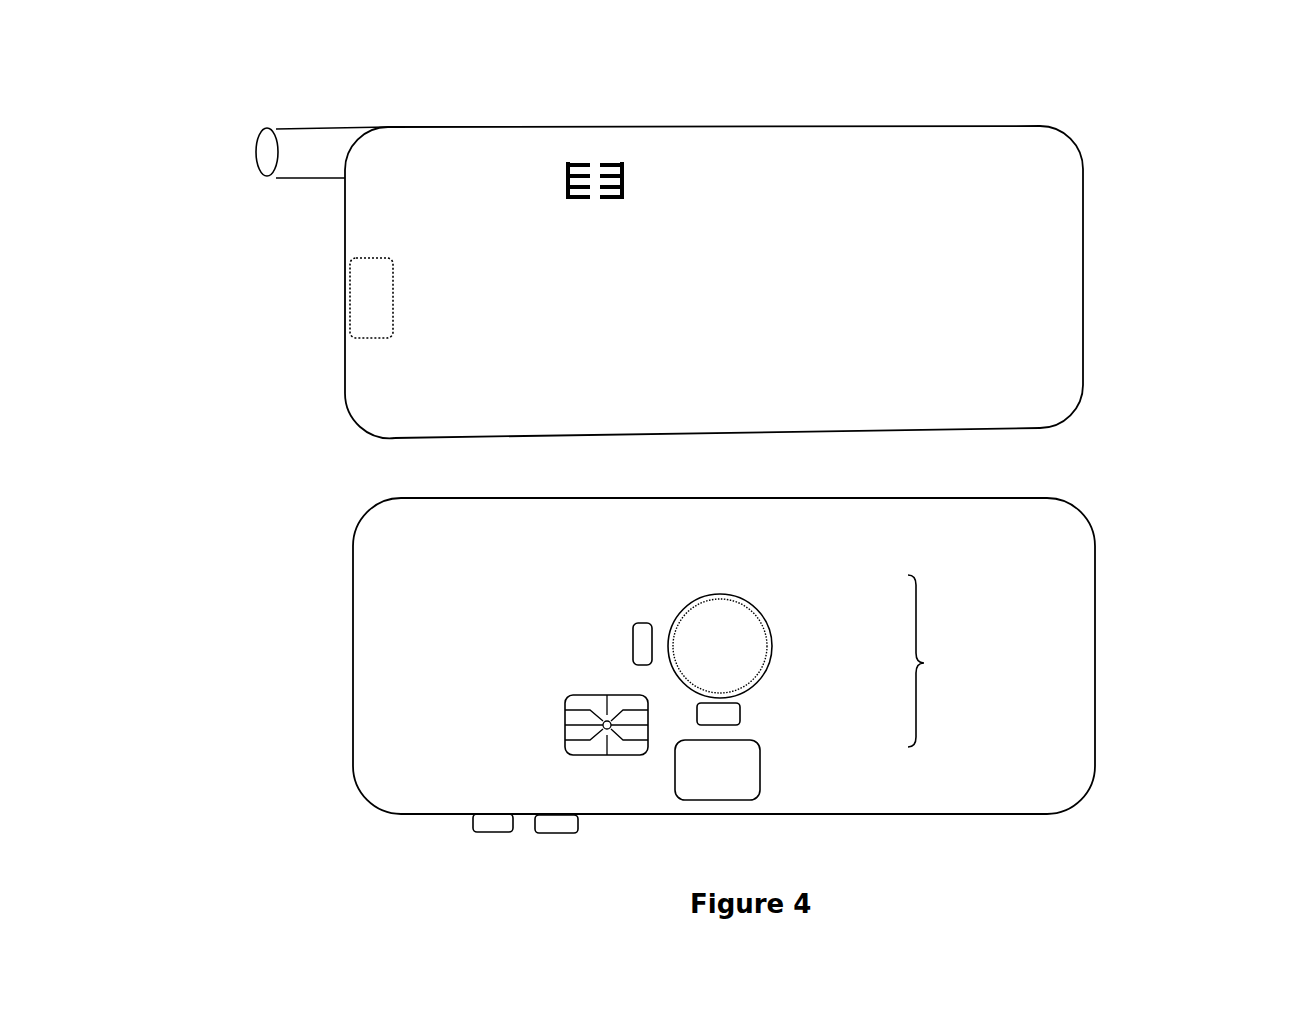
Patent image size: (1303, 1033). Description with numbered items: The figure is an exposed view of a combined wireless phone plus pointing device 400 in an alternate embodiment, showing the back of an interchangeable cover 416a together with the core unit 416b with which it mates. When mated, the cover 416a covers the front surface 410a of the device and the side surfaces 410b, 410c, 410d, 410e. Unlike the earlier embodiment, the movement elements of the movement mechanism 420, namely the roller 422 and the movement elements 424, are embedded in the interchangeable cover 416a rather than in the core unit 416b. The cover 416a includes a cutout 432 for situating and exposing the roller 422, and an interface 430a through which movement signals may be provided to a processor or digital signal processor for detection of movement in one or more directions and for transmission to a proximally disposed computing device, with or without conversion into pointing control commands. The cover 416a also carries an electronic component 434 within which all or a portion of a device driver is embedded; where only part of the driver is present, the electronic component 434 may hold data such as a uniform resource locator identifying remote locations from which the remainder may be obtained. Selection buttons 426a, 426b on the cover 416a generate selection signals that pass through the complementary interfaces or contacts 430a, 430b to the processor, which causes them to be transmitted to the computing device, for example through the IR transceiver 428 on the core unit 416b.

The combined wireless phone plus pointing device 400 is at (88, 449).
The front surface 410a is at (1047, 372).
The side surface 410b is at (355, 398).
The side surface 410c is at (1083, 338).
The side surface 410d is at (1025, 121).
The side surface 410e is at (377, 437).
The interchangeable cover 416a is at (514, 574).
The core unit 416b is at (534, 201).
The movement mechanism 420 is at (786, 667).
The roller 422 is at (767, 618).
The movement element 424 is at (632, 638).
The selection button 426a is at (492, 832).
The selection button 426b is at (562, 833).
The IR transceiver 428 is at (393, 298).
The interface 430a is at (563, 727).
The complementary interface 430b is at (626, 172).
The cutout 432 is at (708, 617).
The electronic component 434 is at (768, 785).